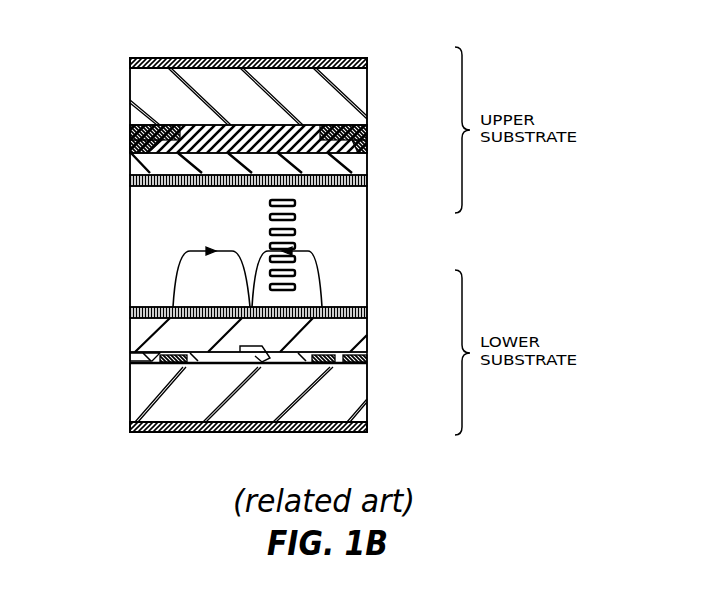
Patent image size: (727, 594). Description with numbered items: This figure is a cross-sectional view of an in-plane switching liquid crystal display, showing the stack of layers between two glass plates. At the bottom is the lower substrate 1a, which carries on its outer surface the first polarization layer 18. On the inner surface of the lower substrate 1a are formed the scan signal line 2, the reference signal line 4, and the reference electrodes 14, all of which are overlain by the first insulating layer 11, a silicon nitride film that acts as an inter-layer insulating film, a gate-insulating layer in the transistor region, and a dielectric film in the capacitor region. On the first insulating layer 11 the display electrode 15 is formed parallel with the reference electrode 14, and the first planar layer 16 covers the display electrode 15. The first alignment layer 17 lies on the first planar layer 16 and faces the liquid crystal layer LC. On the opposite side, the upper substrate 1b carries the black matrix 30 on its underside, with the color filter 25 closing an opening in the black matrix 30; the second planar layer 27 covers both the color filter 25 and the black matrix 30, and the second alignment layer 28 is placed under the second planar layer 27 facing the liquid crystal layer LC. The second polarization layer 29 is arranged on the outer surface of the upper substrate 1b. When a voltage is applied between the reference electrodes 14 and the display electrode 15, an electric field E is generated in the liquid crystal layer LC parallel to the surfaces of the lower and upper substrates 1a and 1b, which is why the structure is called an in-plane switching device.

The lower substrate 1a is at (367, 398).
The upper substrate 1b is at (367, 88).
The scan signal line 2 is at (367, 358).
The reference signal line 4 is at (176, 370).
The first insulating layer 11 is at (130, 353).
The reference electrode 14 is at (322, 365).
The display electrode 15 is at (265, 352).
The first planar layer 16 is at (367, 323).
The first alignment layer 17 is at (367, 301).
The first polarization layer 18 is at (363, 432).
The color filter 25 is at (302, 121).
The second planar layer 27 is at (367, 157).
The second alignment layer 28 is at (367, 190).
The second polarization layer 29 is at (156, 58).
The black matrix 30 is at (367, 131).
The liquid crystal layer LC is at (367, 234).
The electric field E is at (300, 252).